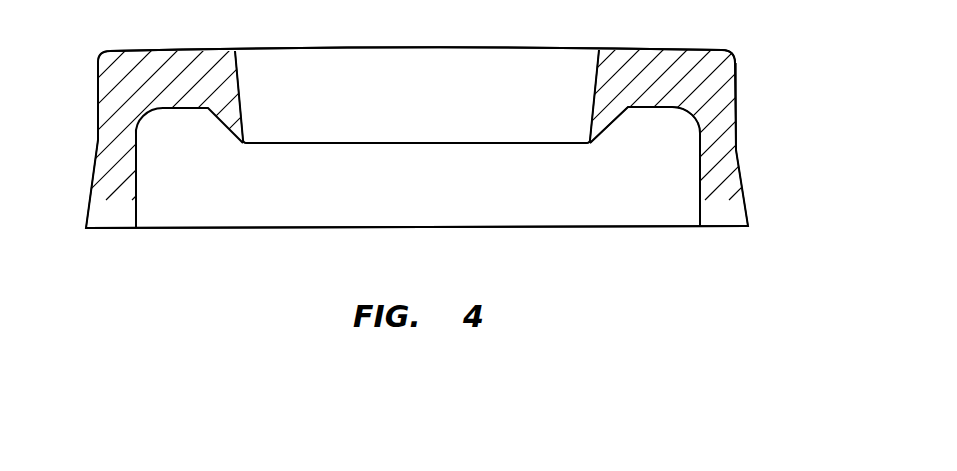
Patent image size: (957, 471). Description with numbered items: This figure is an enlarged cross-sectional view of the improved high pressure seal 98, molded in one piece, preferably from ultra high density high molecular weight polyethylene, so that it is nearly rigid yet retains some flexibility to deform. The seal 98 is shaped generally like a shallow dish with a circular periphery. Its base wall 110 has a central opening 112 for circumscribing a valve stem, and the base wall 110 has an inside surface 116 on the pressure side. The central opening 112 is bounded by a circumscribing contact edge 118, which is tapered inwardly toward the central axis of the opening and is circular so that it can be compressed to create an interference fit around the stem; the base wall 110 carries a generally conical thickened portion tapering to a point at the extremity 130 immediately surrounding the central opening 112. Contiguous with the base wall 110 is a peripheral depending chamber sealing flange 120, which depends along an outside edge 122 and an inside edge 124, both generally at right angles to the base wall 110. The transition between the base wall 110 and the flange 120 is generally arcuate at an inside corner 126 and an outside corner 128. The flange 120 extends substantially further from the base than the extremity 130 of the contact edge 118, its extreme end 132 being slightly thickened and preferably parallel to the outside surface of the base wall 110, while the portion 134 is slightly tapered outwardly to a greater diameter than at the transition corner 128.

The high pressure seal 98 is at (750, 58).
The base wall 110 is at (193, 72).
The central opening 112 is at (423, 115).
The inside surface 116 is at (638, 108).
The contact edge 118 is at (242, 98).
The chamber sealing flange 120 is at (120, 143).
The outside edge 122 is at (99, 81).
The inside edge 124 is at (138, 187).
The inside corner 126 is at (680, 120).
The outside corner 128 is at (733, 48).
The extremity of contact edge 130 is at (244, 147).
The extreme end of depending flange 132 is at (113, 229).
The tapered portion 134 is at (90, 197).